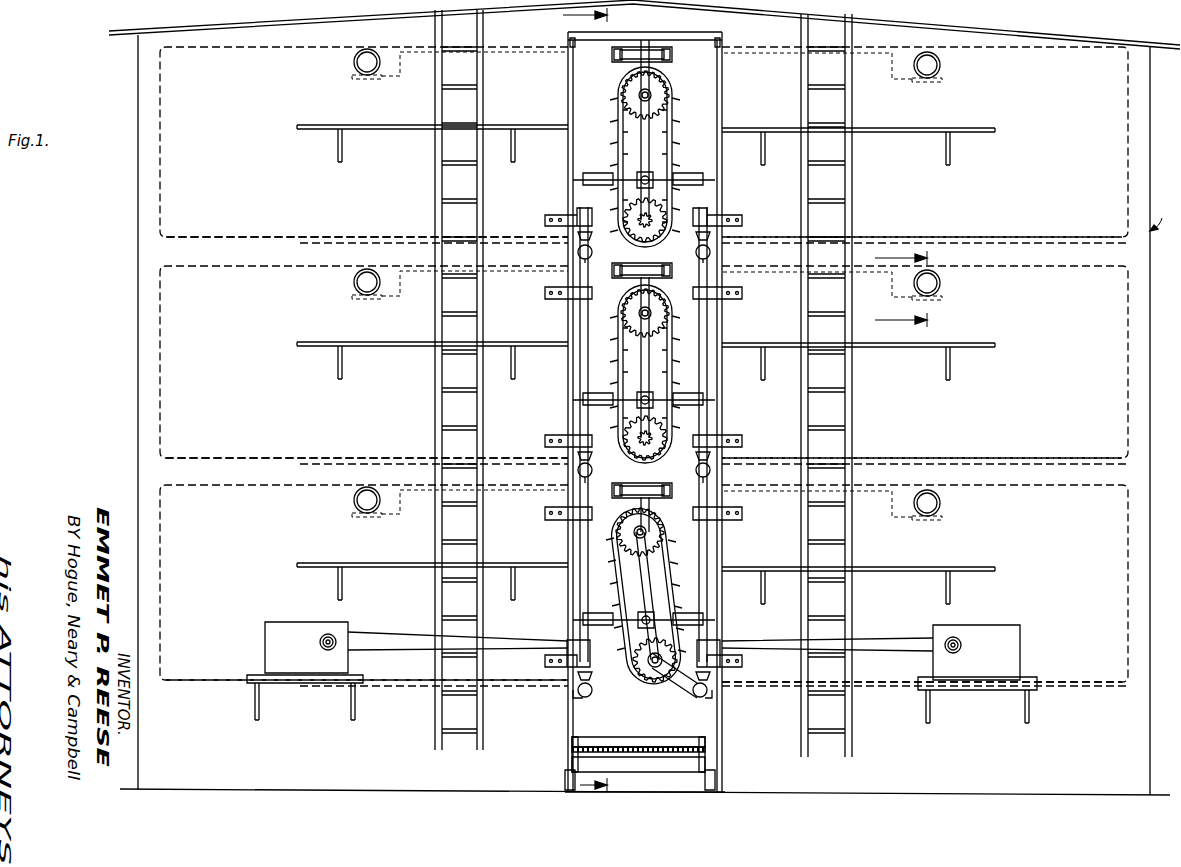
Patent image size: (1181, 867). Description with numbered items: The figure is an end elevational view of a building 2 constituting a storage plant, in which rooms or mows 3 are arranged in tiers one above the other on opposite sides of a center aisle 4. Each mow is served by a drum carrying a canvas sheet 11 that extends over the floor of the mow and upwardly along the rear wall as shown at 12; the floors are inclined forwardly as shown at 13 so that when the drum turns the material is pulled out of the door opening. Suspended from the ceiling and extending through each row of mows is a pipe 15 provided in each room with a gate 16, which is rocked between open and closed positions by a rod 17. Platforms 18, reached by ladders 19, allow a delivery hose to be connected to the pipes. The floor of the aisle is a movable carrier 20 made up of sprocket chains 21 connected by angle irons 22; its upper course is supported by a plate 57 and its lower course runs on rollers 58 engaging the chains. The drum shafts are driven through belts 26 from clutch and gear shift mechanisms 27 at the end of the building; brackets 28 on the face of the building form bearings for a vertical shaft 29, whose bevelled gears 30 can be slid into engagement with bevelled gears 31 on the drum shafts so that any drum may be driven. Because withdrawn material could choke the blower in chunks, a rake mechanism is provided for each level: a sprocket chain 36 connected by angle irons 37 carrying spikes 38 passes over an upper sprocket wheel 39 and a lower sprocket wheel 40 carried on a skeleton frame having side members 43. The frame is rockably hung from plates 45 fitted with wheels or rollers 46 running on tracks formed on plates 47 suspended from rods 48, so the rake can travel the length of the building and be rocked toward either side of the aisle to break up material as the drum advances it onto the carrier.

The building 2 is at (867, 402).
The rooms or mows 3 is at (123, 490).
The center aisle 4 is at (663, 718).
The canvas sheet 11 is at (365, 237).
The rear wall portion of canvas sheet 12 is at (163, 180).
The inclined floor 13 is at (297, 240).
The pipe 15 is at (354, 62).
The gate 16 is at (355, 80).
The rod 17 is at (405, 66).
The platform 18 is at (390, 125).
The ladder 19 is at (435, 405).
The movable carrier 20 is at (645, 736).
The sprocket chains 21 is at (705, 745).
The angle irons 22 is at (592, 737).
The belt 26 is at (380, 634).
The clutch and gear shift mechanism 27 is at (275, 635).
The bracket 28 is at (735, 217).
The vertical shaft 29 is at (708, 332).
The bevelled gears 30 is at (712, 237).
The bevelled gears on drum shafts 31 is at (712, 252).
The sprocket chain 36 is at (675, 153).
The angle irons 37 is at (618, 120).
The spikes 38 is at (680, 125).
The upper sprocket wheel 39 is at (670, 85).
The lower sprocket wheel 40 is at (668, 210).
The side members 43 is at (618, 85).
The plate 45 is at (672, 55).
The wheels or rollers 46 is at (665, 50).
The track plate 47 is at (648, 45).
The rod 48 is at (715, 35).
The plate 57 is at (572, 749).
The rollers 58 is at (565, 782).